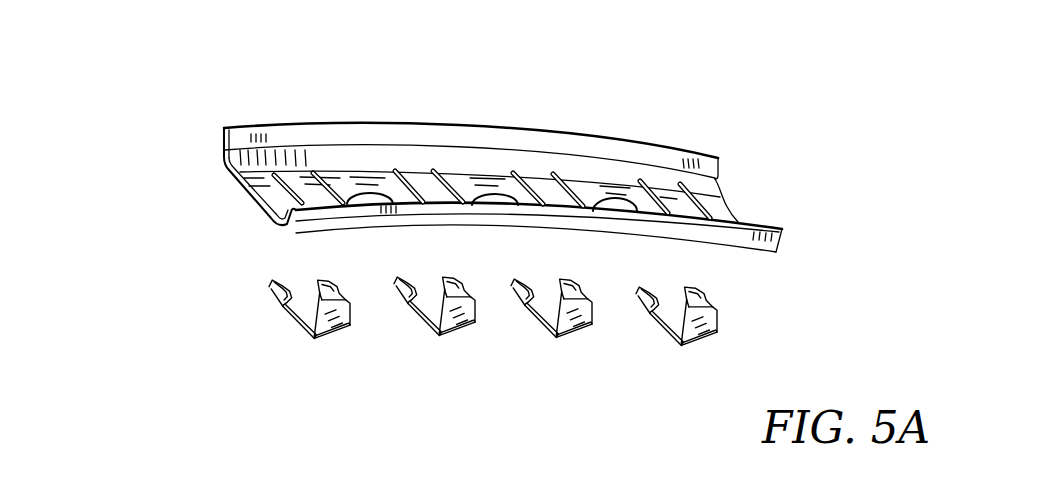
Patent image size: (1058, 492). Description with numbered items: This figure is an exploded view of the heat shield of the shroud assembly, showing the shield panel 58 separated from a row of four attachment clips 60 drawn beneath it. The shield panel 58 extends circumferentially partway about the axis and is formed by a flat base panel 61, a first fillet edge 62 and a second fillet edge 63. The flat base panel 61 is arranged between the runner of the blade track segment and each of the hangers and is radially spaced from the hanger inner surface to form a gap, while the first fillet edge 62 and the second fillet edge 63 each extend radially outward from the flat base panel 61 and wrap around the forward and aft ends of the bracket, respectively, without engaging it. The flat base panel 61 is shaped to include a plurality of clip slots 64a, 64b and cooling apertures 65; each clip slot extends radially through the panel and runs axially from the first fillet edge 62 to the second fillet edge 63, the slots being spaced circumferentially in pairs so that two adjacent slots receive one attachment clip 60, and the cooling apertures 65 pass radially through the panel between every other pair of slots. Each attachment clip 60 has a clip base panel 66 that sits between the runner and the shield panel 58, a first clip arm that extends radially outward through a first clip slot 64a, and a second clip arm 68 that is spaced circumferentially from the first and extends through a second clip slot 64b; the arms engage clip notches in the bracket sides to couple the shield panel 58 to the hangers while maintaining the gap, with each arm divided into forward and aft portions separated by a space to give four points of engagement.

The shield panel 58 is at (426, 134).
The attachment clip 60 is at (278, 322).
The flat base panel 61 is at (420, 118).
The first fillet edge 62 is at (225, 148).
The second fillet edge 63 is at (297, 225).
The first clip slot 64a is at (396, 153).
The second clip slot 64b is at (441, 162).
The cooling aperture 65 is at (371, 193).
The clip base panel 66 is at (424, 323).
The second clip arm 68 is at (477, 322).